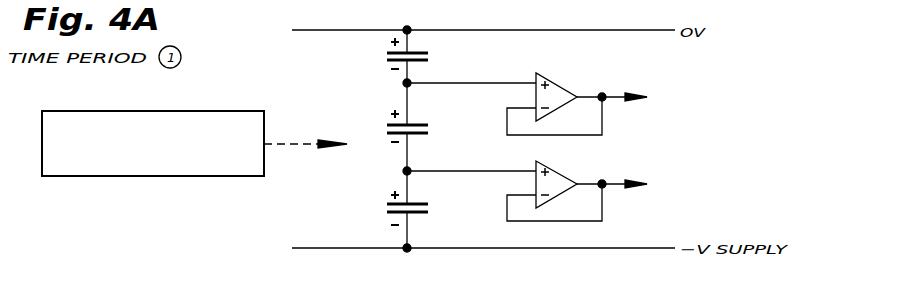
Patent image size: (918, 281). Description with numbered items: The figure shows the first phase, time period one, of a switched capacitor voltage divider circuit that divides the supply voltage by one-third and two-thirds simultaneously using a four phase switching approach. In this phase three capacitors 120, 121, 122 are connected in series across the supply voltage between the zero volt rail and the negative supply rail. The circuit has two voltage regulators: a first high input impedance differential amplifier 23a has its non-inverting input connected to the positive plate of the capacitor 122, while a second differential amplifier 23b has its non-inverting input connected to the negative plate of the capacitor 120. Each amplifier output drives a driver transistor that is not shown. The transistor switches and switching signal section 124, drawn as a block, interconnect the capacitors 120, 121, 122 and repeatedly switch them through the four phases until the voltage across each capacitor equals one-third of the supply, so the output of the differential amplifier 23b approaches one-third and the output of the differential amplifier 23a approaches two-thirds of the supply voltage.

The capacitor 120 is at (430, 58).
The capacitor 121 is at (430, 131).
The capacitor 122 is at (430, 210).
The first high input impedance differential amplifier 23a is at (555, 171).
The second differential amplifier 23b is at (555, 84).
The switches and switching signal section 124 is at (195, 176).